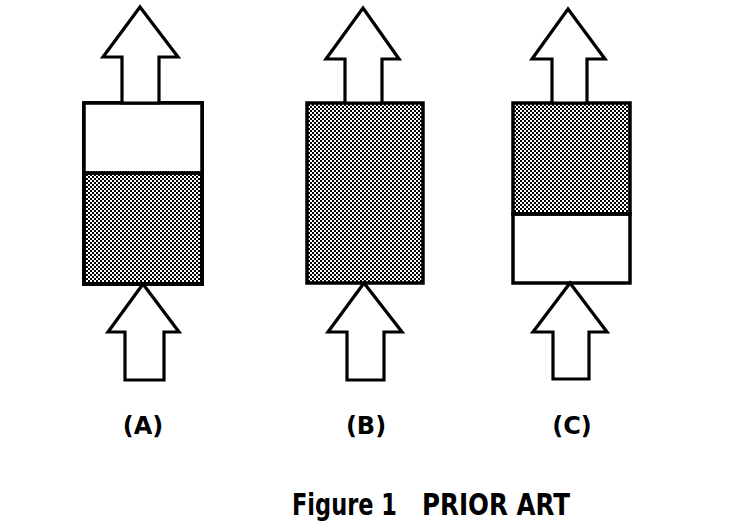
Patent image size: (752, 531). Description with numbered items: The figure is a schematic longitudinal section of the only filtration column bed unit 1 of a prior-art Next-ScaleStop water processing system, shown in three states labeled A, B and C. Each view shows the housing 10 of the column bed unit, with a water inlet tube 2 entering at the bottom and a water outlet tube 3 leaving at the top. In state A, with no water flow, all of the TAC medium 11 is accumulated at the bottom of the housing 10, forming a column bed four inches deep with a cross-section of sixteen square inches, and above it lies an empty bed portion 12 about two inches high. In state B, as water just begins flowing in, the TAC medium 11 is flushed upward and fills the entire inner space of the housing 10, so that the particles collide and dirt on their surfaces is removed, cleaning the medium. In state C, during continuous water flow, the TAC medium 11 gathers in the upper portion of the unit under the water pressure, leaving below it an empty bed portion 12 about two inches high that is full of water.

The filtration column bed unit 1 is at (125, 182).
The water inlet tube 2 is at (357, 331).
The water outlet tube 3 is at (354, 55).
The housing 10 is at (192, 100).
The TAC medium 11 is at (357, 193).
The empty bed portion 12 is at (357, 193).